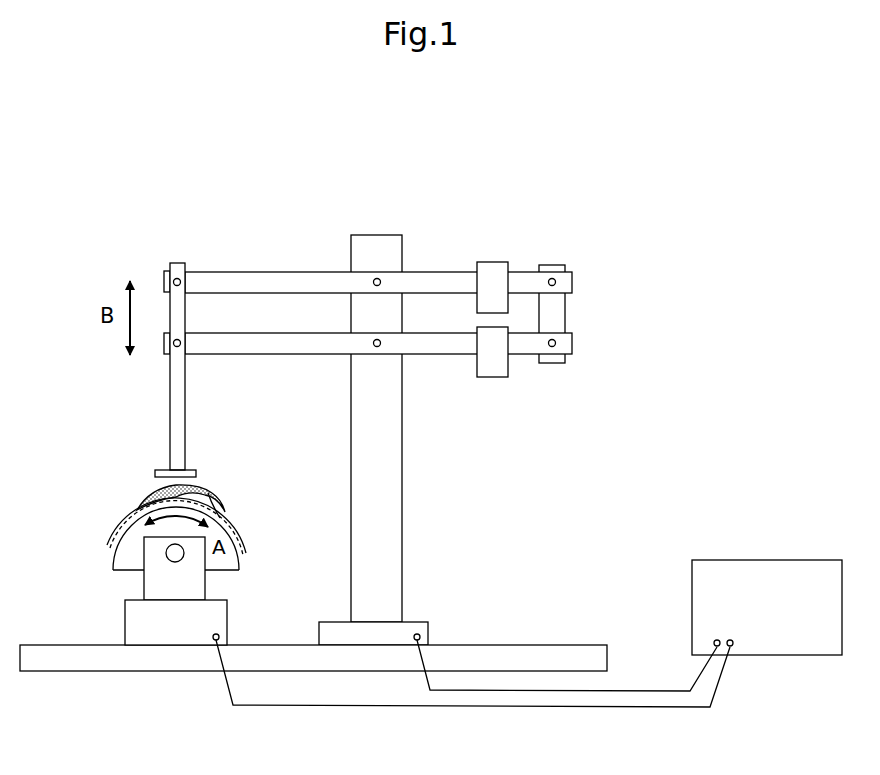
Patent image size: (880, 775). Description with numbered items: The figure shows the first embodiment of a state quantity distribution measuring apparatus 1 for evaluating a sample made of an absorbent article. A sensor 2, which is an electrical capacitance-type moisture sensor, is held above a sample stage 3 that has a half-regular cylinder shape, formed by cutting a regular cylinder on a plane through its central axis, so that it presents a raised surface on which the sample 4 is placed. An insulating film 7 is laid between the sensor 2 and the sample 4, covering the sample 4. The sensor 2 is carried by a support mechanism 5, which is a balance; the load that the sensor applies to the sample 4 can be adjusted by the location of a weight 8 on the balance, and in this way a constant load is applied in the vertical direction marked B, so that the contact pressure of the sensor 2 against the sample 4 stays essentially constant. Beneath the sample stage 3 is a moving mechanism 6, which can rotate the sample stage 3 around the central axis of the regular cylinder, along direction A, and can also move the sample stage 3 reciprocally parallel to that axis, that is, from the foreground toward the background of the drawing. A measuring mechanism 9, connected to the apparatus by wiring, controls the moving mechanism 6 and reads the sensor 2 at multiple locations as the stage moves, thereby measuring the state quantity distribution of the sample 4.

The state quantity distribution measuring apparatus 1 is at (195, 203).
The sensor 2 is at (162, 471).
The sample stage 3 is at (132, 558).
The sample 4 is at (152, 500).
The support mechanism 5 is at (580, 246).
The moving mechanism 6 is at (155, 625).
The insulating film 7 is at (107, 548).
The weight 8 is at (494, 355).
The measuring mechanism 9 is at (788, 573).